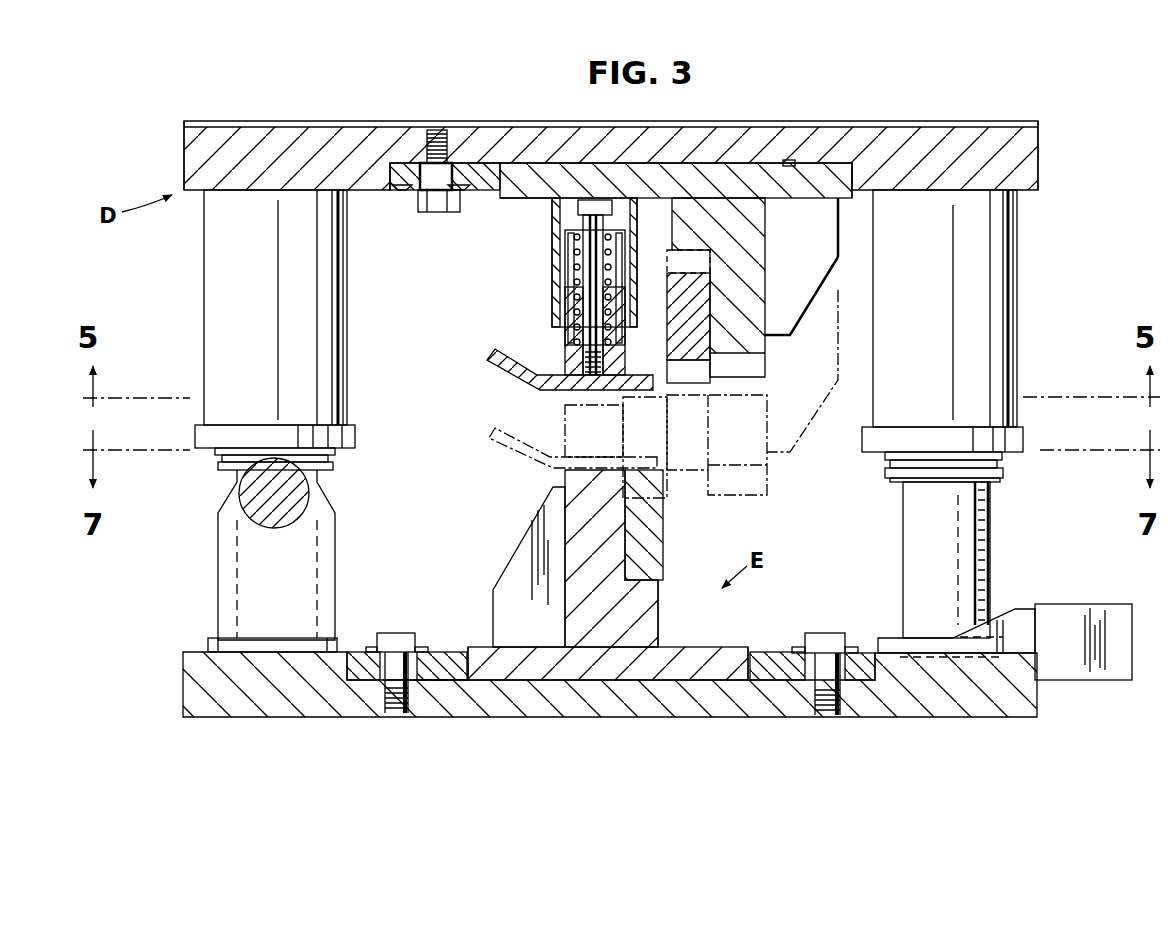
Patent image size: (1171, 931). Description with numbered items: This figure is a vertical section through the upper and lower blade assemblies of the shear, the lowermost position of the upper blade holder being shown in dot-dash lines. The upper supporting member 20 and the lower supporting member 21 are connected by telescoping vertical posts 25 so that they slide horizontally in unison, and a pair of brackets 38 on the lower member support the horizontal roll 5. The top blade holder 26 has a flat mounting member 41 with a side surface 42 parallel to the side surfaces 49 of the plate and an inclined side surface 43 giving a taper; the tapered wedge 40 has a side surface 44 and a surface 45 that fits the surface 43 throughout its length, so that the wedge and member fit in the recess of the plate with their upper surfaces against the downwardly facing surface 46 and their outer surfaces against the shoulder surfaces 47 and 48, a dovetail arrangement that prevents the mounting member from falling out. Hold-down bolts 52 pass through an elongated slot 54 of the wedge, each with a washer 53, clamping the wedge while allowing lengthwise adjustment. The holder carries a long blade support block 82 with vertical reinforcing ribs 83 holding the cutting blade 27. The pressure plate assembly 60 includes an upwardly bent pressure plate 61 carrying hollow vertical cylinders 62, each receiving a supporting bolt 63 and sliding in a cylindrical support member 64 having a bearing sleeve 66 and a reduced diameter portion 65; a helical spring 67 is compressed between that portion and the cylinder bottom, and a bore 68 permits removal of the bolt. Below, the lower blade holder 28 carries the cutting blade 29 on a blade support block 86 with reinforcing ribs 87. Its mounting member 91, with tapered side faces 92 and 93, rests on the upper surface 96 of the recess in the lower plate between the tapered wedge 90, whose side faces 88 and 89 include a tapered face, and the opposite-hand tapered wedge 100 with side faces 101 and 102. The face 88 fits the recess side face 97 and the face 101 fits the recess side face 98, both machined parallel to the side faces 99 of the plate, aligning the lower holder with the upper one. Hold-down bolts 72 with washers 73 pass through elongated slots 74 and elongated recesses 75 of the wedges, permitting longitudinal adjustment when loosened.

The horizontal roll 5 is at (237, 487).
The upper supporting member 20 is at (193, 152).
The lower supporting member 21 is at (190, 680).
The telescoping vertical posts 25 is at (217, 310).
The top blade holder 26 is at (770, 367).
The cutting blade 27 is at (673, 333).
The lower blade holder 28 is at (583, 561).
The cutting blade 29 is at (655, 558).
The brackets 38 is at (218, 528).
The tapered wedge 40 is at (452, 168).
The mounting member 41 is at (660, 173).
The side surface 42 is at (857, 170).
The side surface 43 is at (510, 198).
The side surface 44 is at (388, 170).
The wedge surface 45 is at (503, 185).
The downwardly facing surface 46 is at (789, 165).
The shoulder side surface 47 is at (393, 192).
The shoulder side surface 48 is at (838, 202).
The side surfaces 49 is at (185, 178).
The hold-down bolts 52 is at (418, 222).
The washer 53 is at (415, 193).
The elongated slot 54 is at (430, 165).
The pressure plate assembly 60 is at (574, 274).
The pressure plate 61 is at (492, 358).
The hollow vertical cylinders 62 is at (563, 337).
The supporting bolt 63 is at (612, 217).
The cylindrical support members 64 is at (552, 243).
The reduced diameter portion 65 is at (577, 222).
The bearing sleeve 66 is at (645, 253).
The helical spring 67 is at (577, 264).
The bore 68 is at (594, 197).
The hold-down bolts 72 is at (395, 630).
The washer 73 is at (418, 648).
The elongated slot 74 is at (387, 675).
The elongated recess 75 is at (427, 650).
The blade support block 82 is at (760, 233).
The reinforcing ribs 83 is at (788, 333).
The blade support block 86 is at (650, 625).
The reinforcing ribs 87 is at (502, 592).
The side face 88 is at (329, 638).
The side face 89 is at (477, 677).
The tapered wedge 90 is at (383, 685).
The mounting member 91 is at (547, 652).
The side face 92 is at (468, 650).
The side face 93 is at (752, 660).
The upper surface 96 is at (538, 680).
The recess side face 97 is at (357, 680).
The recess side face 98 is at (870, 673).
The side faces 99 is at (183, 706).
The tapered wedge 100 is at (828, 680).
The side face 101 is at (903, 637).
The side face 102 is at (745, 668).